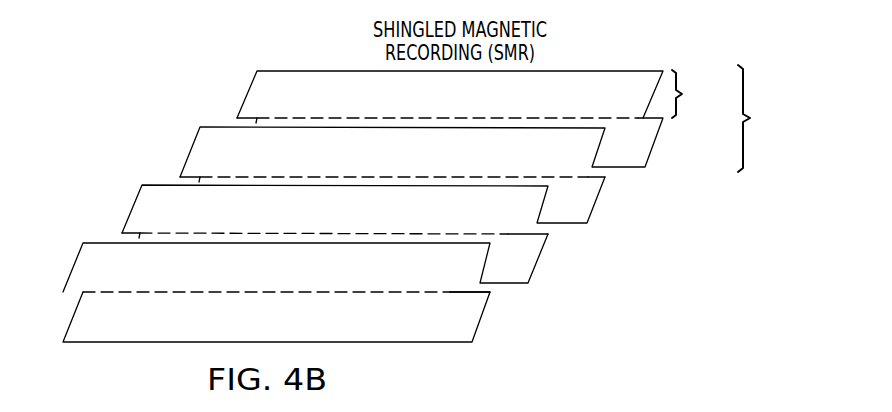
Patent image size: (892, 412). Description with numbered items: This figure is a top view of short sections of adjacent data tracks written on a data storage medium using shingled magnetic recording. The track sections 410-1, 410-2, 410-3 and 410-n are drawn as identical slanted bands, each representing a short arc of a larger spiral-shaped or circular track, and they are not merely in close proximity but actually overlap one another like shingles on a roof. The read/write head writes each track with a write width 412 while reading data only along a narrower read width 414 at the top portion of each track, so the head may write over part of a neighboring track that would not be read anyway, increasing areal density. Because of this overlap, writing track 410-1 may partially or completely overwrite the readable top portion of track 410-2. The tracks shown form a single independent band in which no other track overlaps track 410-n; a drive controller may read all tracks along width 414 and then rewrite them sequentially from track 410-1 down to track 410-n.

The SMR track section 410-1 is at (227, 93).
The SMR track section 410-2 is at (170, 152).
The SMR track section 410-3 is at (558, 264).
The SMR track section 410-n is at (500, 322).
The write width 412 is at (763, 118).
The read width 414 is at (697, 94).